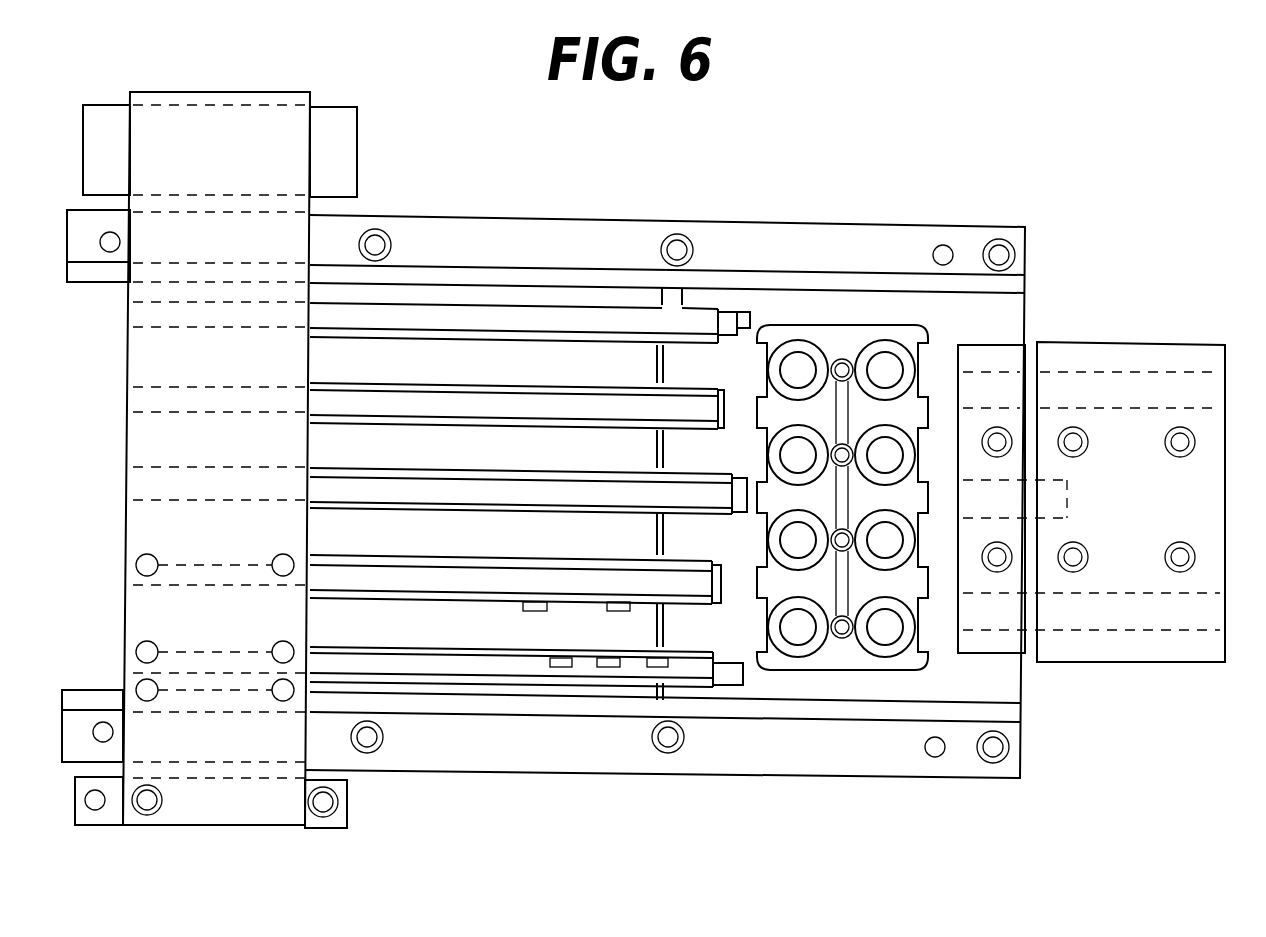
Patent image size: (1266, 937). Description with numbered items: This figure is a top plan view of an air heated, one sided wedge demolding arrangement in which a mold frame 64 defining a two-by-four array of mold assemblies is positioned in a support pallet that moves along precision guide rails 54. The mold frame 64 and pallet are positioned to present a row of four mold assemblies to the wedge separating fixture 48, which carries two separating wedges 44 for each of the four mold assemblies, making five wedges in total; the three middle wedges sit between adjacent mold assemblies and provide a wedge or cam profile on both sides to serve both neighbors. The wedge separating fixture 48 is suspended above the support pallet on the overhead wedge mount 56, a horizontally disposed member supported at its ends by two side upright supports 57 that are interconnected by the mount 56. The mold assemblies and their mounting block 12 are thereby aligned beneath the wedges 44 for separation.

The connector block 12 is at (797, 338).
The separating wedges 44 is at (731, 510).
The wedge separating fixture 48 is at (577, 300).
The precision guide rails 54 is at (467, 245).
The overhead wedge mount 56 is at (237, 733).
The side upright supports 57 is at (330, 105).
The mold frame 64 is at (842, 415).